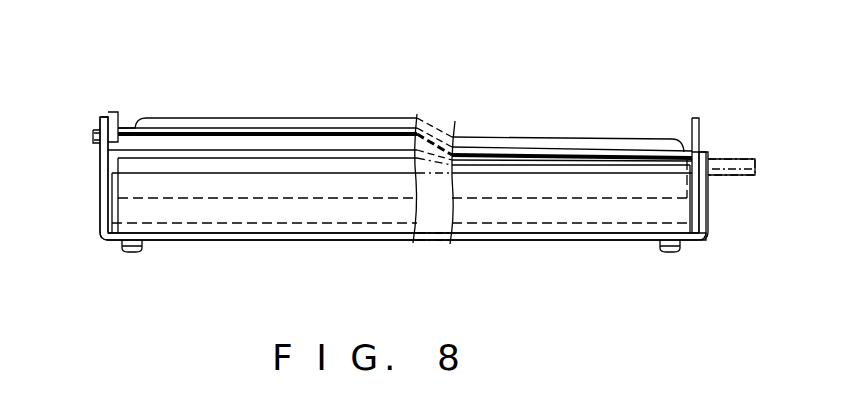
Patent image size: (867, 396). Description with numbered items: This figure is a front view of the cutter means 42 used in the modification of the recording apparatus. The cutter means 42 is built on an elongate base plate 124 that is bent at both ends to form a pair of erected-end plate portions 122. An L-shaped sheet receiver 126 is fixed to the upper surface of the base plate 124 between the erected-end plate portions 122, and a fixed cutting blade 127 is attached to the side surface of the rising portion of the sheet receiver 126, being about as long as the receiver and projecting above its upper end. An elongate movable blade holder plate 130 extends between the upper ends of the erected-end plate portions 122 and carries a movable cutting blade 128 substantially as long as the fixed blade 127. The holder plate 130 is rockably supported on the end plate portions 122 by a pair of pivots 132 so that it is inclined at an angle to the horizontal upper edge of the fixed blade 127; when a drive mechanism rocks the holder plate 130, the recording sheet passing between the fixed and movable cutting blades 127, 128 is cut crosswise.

The cutter means 42 is at (293, 112).
The erected-end plate portions 122 is at (100, 190).
The base plate 124 is at (257, 235).
The sheet receiver 126 is at (343, 217).
The fixed cutting blade 127 is at (268, 173).
The movable cutting blade 128 is at (223, 140).
The movable blade holder plate 130 is at (364, 127).
The pivots 132 is at (98, 131).